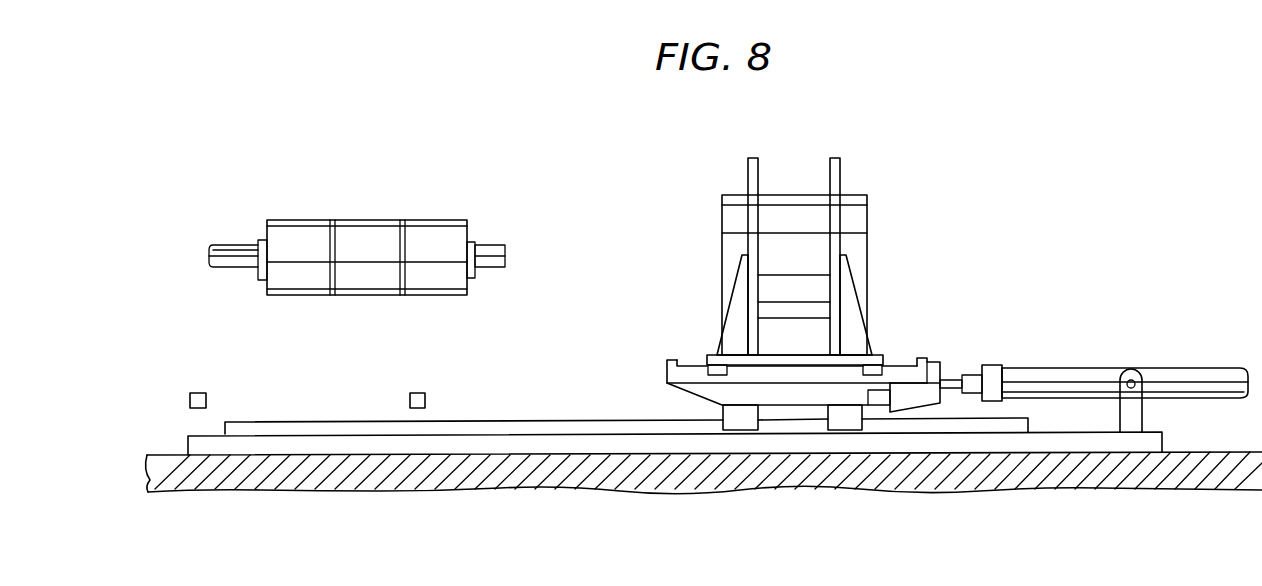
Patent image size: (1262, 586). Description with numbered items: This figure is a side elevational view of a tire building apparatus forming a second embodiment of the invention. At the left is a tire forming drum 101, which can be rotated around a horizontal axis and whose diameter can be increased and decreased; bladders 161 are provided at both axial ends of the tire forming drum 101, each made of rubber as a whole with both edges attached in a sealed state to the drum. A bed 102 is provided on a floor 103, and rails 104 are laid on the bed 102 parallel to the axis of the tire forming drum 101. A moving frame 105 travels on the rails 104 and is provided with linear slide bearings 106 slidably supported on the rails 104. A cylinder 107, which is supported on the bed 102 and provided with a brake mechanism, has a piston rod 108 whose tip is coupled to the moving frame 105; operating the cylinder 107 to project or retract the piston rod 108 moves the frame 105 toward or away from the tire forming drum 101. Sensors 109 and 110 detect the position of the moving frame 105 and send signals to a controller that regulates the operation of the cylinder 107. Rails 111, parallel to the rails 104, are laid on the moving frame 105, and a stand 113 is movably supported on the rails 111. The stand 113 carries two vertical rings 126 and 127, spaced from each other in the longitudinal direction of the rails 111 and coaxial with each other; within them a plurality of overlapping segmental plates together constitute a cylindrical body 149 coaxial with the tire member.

The tire forming drum 101 is at (368, 219).
The bed 102 is at (578, 440).
The floor 103 is at (165, 454).
The rails 104 is at (506, 420).
The moving frame 105 is at (693, 372).
The linear slide bearings 106 is at (730, 412).
The cylinder 107 is at (1066, 367).
The piston rod 108 is at (949, 379).
The sensor 109 is at (198, 392).
The sensor 110 is at (415, 392).
The rails 111 is at (898, 364).
The stand 113 is at (752, 291).
The vertical ring 126 is at (753, 157).
The vertical ring 127 is at (835, 157).
The cylindrical body 149 is at (878, 215).
The bladder 161 is at (293, 218).